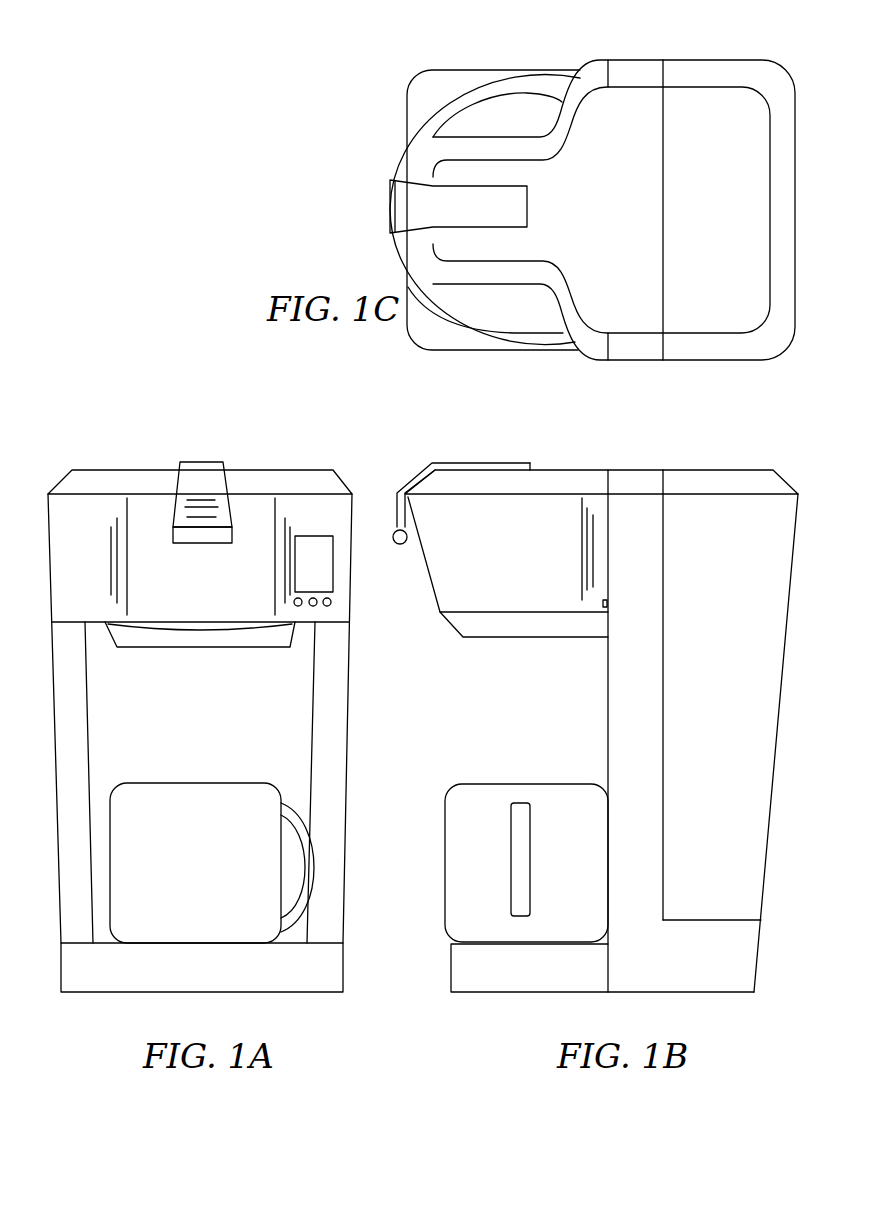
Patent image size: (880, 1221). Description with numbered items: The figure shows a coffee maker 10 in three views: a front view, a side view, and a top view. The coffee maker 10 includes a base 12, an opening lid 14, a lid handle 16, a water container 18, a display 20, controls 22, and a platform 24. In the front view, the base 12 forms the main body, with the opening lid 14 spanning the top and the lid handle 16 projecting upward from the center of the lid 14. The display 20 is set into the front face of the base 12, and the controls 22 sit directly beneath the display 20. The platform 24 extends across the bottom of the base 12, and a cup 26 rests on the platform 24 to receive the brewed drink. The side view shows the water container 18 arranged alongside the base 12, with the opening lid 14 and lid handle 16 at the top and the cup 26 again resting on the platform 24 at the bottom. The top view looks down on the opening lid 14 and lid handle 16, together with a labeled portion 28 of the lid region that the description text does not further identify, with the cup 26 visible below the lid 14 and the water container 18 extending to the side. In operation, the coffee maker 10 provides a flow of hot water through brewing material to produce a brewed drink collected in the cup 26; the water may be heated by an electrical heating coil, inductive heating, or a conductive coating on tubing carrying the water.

In FIG. 1C, the coffee maker 10 is at (348, 83).
In FIG. 1A, the coffee maker 10 is at (122, 398).
In FIG. 1B, the coffee maker 10 is at (425, 438).
In FIG. 1A, the base 12 is at (97, 568).
In FIG. 1B, the base 12 is at (640, 497).
In FIG. 1C, the opening lid 14 is at (578, 210).
In FIG. 1A, the opening lid 14 is at (125, 478).
In FIG. 1B, the opening lid 14 is at (535, 480).
In FIG. 1C, the lid handle 16 is at (449, 219).
In FIG. 1A, the lid handle 16 is at (221, 489).
In FIG. 1B, the lid handle 16 is at (413, 487).
In FIG. 1B, the water container 18 is at (727, 650).
In FIG. 1A, the display 20 is at (320, 563).
In FIG. 1A, the controls 22 is at (318, 605).
In FIG. 1A, the platform 24 is at (330, 943).
In FIG. 1C, the cup 26 is at (397, 167).
In FIG. 1A, the cup 26 is at (217, 863).
In FIG. 1B, the cup 26 is at (500, 818).
In FIG. 1C, the lid portion 28 is at (529, 127).